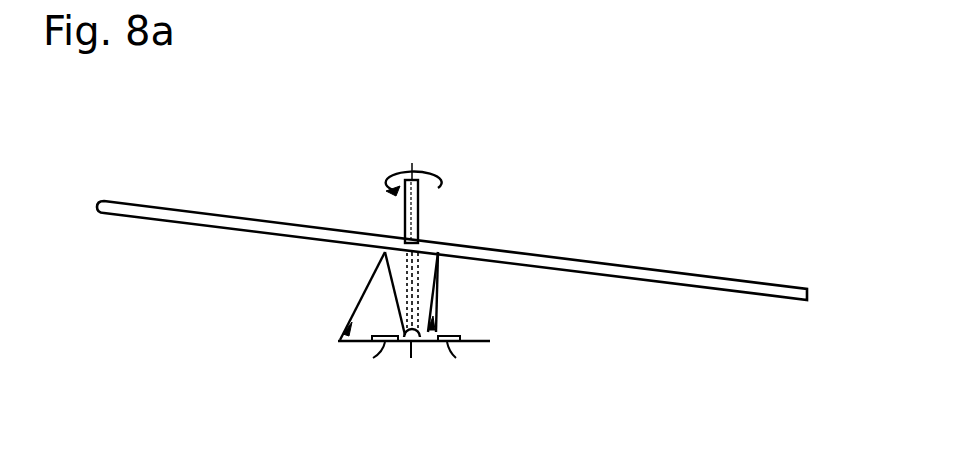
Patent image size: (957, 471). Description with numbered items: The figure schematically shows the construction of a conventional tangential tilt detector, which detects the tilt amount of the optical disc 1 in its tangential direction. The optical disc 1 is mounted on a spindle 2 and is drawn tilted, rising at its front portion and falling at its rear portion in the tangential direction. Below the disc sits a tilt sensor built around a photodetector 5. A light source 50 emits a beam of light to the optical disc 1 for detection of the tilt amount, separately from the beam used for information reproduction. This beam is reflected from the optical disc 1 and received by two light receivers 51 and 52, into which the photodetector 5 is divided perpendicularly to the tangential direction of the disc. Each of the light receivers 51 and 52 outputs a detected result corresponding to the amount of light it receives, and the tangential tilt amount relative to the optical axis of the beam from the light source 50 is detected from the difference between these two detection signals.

The optical disc 1 is at (642, 265).
The spindle 2 is at (424, 183).
The photodetector 5 is at (480, 341).
The light source 50 is at (411, 343).
The light receiver 51 is at (445, 343).
The light receiver 52 is at (382, 343).